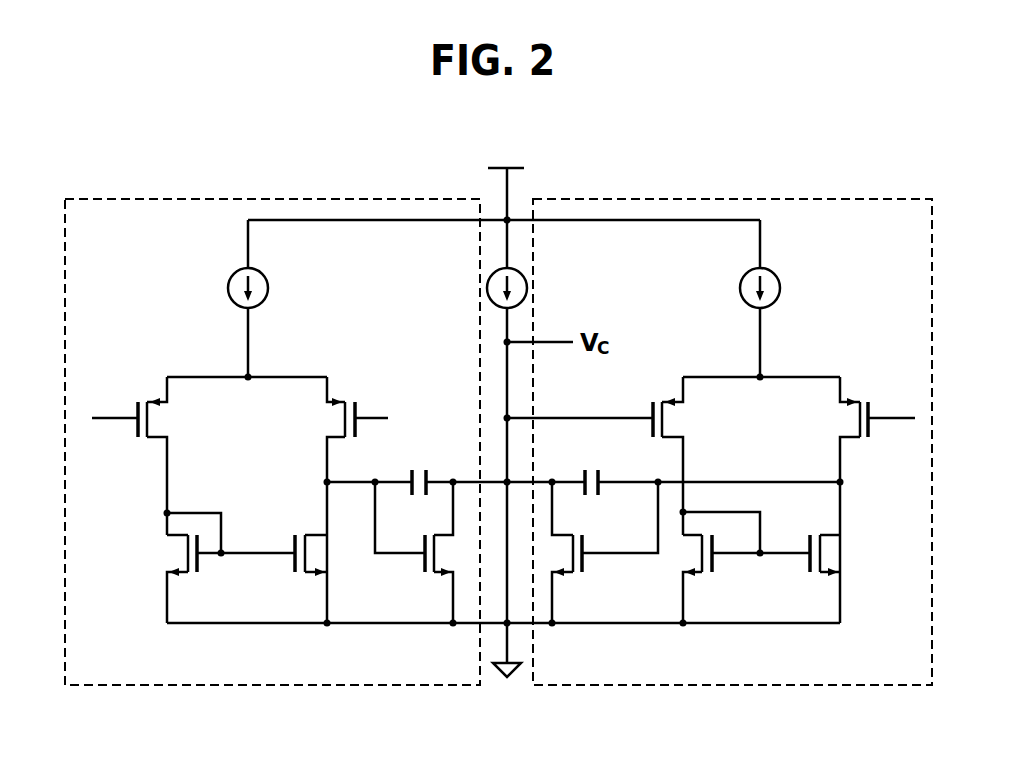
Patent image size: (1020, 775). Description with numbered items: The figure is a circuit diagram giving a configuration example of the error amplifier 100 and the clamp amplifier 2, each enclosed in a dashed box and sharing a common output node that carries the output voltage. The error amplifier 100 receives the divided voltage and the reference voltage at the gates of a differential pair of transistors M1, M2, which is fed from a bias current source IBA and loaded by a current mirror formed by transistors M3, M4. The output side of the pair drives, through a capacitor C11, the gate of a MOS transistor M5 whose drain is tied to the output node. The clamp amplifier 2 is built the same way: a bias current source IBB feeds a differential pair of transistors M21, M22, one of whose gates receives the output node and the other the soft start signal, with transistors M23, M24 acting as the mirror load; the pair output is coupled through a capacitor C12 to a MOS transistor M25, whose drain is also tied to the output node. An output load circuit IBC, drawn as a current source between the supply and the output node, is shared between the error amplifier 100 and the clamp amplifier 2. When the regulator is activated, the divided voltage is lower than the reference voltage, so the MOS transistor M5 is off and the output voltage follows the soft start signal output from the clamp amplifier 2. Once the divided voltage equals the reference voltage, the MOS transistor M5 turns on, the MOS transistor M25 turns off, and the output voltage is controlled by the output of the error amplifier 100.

The error amplifier 100 is at (141, 199).
The clamp amplifier 2 is at (800, 199).
The PMOS transistor M1 is at (151, 456).
The PMOS transistor M2 is at (335, 500).
The NMOS transistor M3 is at (168, 579).
The NMOS transistor M4 is at (320, 555).
The MOS transistor M5 is at (414, 552).
The capacitor C11 is at (424, 467).
The capacitor C12 is at (600, 467).
The PMOS transistor M21 is at (655, 453).
The PMOS transistor M22 is at (877, 500).
The NMOS transistor M23 is at (709, 579).
The NMOS transistor M24 is at (809, 573).
The MOS transistor M25 is at (605, 552).
The bias current source IBA is at (271, 288).
The bias current source IBB is at (783, 288).
The output load circuit IBC is at (533, 288).